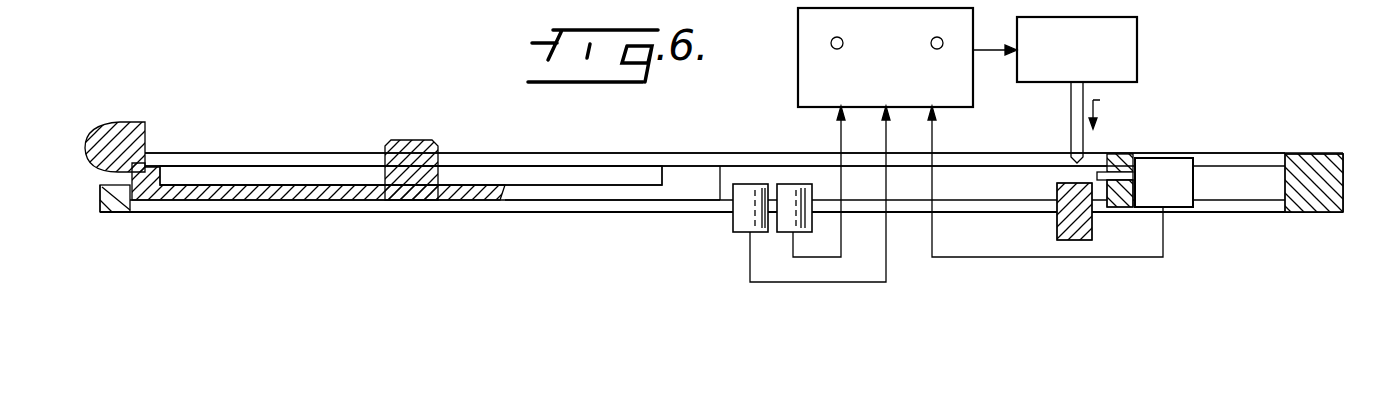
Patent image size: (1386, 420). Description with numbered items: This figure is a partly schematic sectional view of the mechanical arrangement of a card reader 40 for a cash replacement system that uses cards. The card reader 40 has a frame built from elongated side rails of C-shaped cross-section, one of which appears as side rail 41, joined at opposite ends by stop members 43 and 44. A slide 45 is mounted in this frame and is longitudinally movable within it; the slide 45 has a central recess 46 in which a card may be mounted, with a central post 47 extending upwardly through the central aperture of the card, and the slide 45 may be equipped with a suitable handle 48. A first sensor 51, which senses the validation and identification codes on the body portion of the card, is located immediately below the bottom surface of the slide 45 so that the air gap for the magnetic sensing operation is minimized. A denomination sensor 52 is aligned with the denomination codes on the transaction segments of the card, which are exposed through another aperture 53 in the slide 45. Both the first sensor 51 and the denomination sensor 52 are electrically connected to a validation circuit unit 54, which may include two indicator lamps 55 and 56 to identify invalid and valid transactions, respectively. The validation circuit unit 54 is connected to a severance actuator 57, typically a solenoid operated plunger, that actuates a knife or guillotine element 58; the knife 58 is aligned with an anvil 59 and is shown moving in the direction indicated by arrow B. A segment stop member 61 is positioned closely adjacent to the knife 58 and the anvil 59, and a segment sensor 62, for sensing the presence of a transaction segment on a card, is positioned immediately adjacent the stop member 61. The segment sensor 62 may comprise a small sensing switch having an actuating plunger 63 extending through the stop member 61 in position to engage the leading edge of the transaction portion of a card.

The card reader 40 is at (570, 110).
The side rail 41 is at (342, 158).
The stop member 43 is at (115, 208).
The stop member 44 is at (1303, 160).
The slide 45 is at (318, 192).
The central recess 46 is at (250, 172).
The central post 47 is at (413, 140).
The handle 48 is at (120, 128).
The first sensor 51 is at (738, 227).
The denomination sensor 52 is at (800, 185).
The aperture 53 is at (523, 192).
The validation circuit unit 54 is at (798, 78).
The indicator lamp 55 is at (831, 42).
The indicator lamp 56 is at (943, 40).
The severance actuator 57 is at (1137, 45).
The knife 58 is at (1071, 115).
The anvil 59 is at (1062, 226).
The segment stop member 61 is at (1123, 207).
The segment sensor 62 is at (1167, 168).
The actuating plunger 63 is at (1115, 172).
The direction B is at (1106, 108).